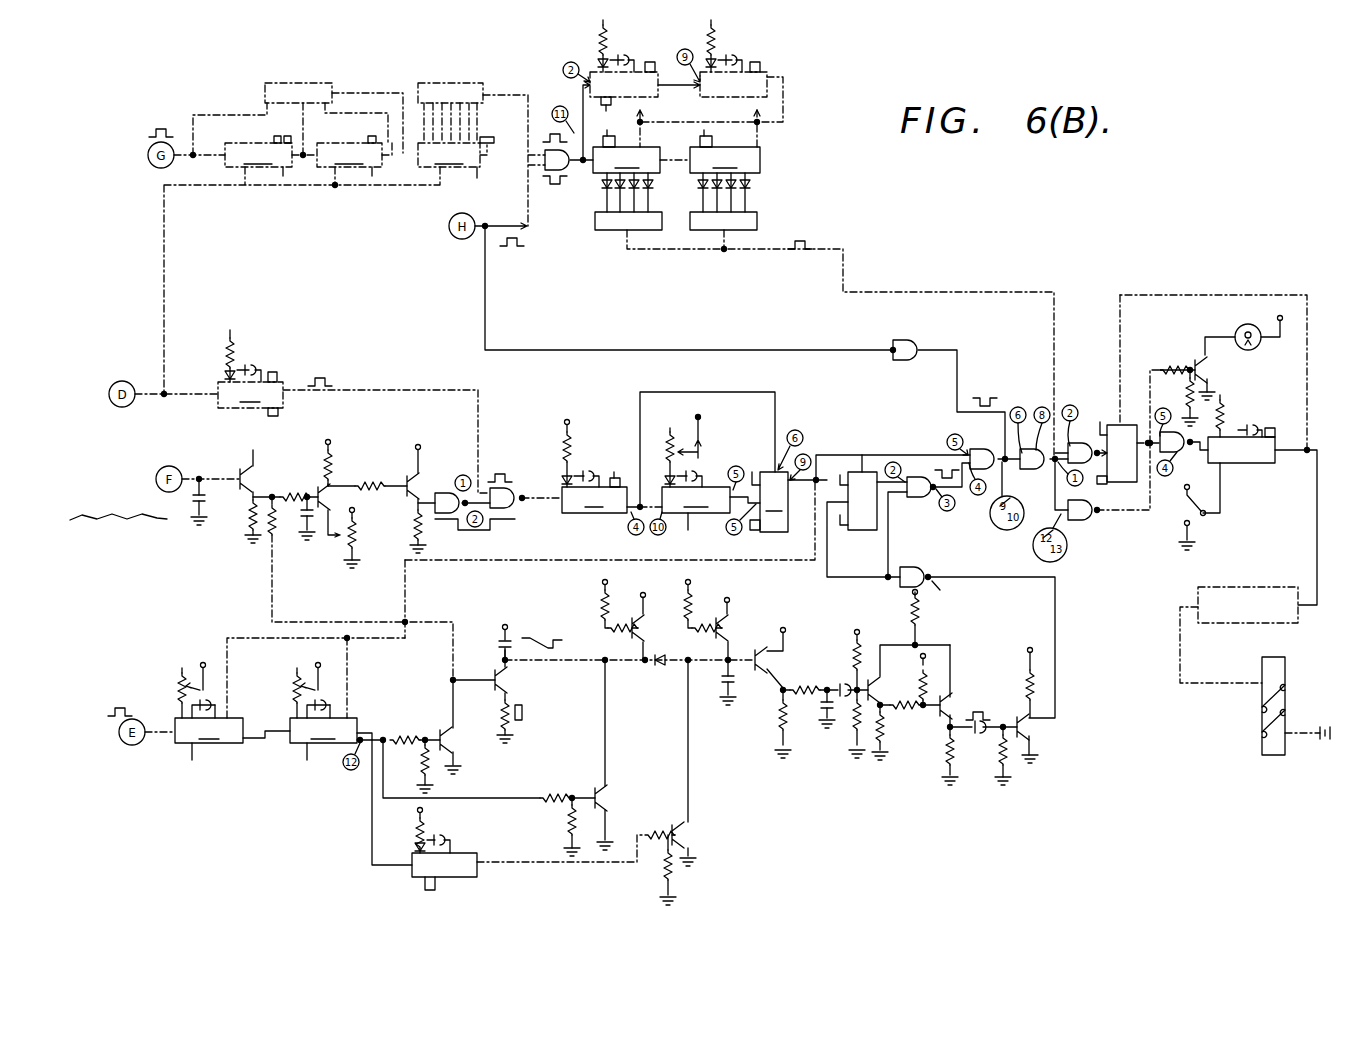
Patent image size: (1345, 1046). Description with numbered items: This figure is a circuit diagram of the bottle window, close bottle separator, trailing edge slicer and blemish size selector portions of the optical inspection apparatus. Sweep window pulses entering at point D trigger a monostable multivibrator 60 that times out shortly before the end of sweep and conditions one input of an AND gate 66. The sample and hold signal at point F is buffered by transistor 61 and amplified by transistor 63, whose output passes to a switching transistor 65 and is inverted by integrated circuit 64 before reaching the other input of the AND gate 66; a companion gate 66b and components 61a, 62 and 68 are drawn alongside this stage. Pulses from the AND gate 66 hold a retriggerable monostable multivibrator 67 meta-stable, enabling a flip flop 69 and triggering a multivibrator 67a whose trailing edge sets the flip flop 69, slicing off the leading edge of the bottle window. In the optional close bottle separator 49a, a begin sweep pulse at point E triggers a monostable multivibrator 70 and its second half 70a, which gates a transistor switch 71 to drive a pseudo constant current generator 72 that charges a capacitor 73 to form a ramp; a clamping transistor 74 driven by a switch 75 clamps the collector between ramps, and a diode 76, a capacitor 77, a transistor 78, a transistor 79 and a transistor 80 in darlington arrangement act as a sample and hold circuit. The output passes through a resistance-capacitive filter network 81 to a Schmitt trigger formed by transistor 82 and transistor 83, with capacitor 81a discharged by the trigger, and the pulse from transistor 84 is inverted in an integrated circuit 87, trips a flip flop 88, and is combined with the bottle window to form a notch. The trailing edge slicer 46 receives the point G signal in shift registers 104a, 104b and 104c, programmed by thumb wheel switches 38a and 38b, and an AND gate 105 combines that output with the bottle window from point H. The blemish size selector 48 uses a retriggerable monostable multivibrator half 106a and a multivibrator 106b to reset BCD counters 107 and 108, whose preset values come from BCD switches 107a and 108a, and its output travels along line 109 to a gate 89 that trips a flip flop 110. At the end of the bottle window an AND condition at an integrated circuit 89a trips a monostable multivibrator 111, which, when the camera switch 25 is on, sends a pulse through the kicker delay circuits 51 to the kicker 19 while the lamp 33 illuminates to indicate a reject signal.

The kicker 19 is at (1288, 676).
The camera switch 25 is at (1204, 525).
The lamp 33 is at (1238, 332).
The thumb wheel switch 38a is at (295, 83).
The thumb wheel switch 38b is at (456, 83).
The trailing edge slicer 46 is at (369, 70).
The blemish size selector 48 is at (609, 259).
The close bottle separator 49a is at (324, 778).
The kicker delay circuits 51 is at (1292, 618).
The monostable multivibrator 60 is at (354, 411).
The transistor 61 is at (239, 477).
The resistor 61a is at (262, 542).
The transistor 62 is at (298, 494).
The transistor 63 is at (326, 477).
The integrated circuit 64 is at (344, 548).
The switching transistor 65 is at (406, 478).
The AND gate 66 is at (514, 490).
The AND gate 66b is at (452, 493).
The monostable multivibrator 67 is at (594, 467).
The monostable multivibrator 67a is at (711, 496).
The variable resistor 68 is at (664, 442).
The flip flop 69 is at (860, 493).
The monostable multivibrator 70 is at (209, 712).
The monostable multivibrator 70a is at (338, 712).
The transistor switch 71 is at (442, 729).
The pseudo constant current generator 72 is at (492, 676).
The capacitor 73 is at (512, 642).
The clamping transistor 74 is at (635, 619).
The switch 75 is at (576, 758).
The diode 76 is at (663, 668).
The capacitor 77 is at (727, 686).
The transistor 78 is at (758, 669).
The transistor 79 is at (718, 616).
The transistor 80 is at (780, 700).
The resistance-capacitive filter network 81 is at (826, 686).
The capacitor 81a is at (824, 722).
The transistor 82 is at (869, 659).
The transistor 83 is at (936, 718).
The transistor 84 is at (1017, 715).
The integrated circuit 87 is at (920, 493).
The flip flop 88 is at (865, 528).
The integrated circuit 89 is at (1078, 450).
The integrated circuit 89a is at (1188, 455).
The shift register 104a is at (271, 151).
The shift register 104b is at (349, 151).
The shift register 104c is at (456, 152).
The AND gate 105 is at (532, 163).
The monostable multivibrator half 106a is at (632, 70).
The monostable multivibrator 106b is at (745, 70).
The BCD switch counter 107 is at (626, 151).
The BCD switch 107a is at (595, 222).
The BCD counter 108 is at (725, 151).
The BCD switch 108a is at (757, 214).
The line 109 is at (872, 302).
The flip flop 110 is at (1128, 472).
The monostable multivibrator 111 is at (1248, 465).